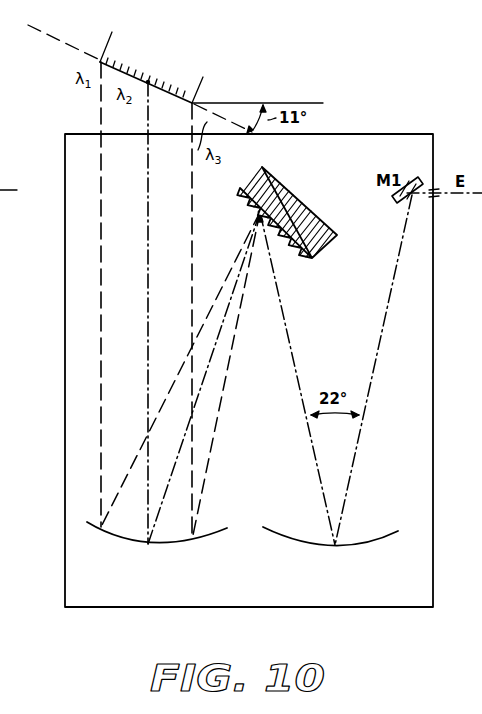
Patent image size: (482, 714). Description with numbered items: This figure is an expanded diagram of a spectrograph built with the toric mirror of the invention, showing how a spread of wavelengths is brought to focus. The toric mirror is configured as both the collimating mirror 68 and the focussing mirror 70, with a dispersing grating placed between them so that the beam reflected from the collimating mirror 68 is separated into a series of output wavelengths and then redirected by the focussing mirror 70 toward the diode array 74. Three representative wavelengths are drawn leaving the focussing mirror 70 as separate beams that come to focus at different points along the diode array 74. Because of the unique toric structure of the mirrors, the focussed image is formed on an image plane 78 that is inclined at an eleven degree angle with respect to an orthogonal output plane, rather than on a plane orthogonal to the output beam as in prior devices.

The image plane 78 is at (58, 44).
The diode array 74 is at (123, 62).
The focussing mirror 70 is at (222, 533).
The collimating mirror 68 is at (375, 543).